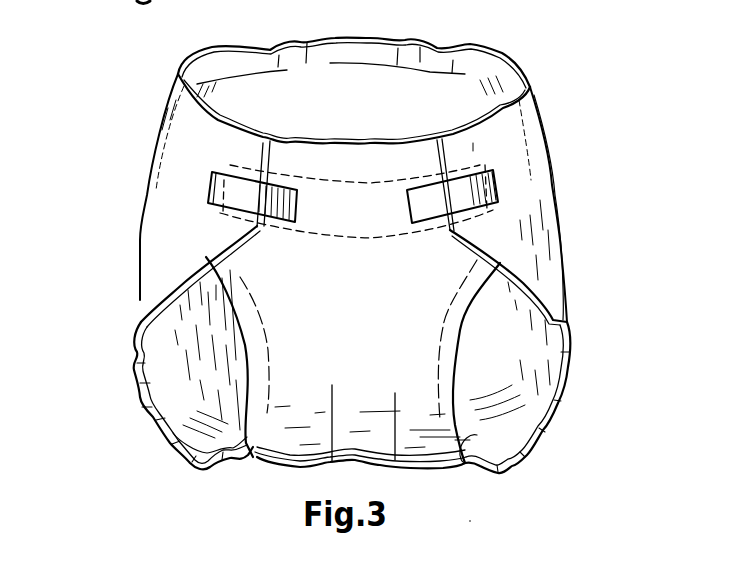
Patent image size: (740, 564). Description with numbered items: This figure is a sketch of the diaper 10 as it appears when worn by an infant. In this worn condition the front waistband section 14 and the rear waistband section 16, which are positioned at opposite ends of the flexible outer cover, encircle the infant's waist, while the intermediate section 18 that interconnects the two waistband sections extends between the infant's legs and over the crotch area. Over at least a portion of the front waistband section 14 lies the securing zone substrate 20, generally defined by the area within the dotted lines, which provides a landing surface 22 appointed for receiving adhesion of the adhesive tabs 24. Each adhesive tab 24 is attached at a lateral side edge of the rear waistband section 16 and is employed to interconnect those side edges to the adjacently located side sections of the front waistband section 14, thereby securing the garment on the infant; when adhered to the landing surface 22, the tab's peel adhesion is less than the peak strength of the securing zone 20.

The diaper 10 is at (132, 84).
The front waistband section 14 is at (365, 137).
The rear waistband section 16 is at (338, 50).
The intermediate section 18 is at (355, 462).
The securing zone substrate 20 is at (408, 235).
The landing surface 22 is at (367, 219).
The adhesive tab 24 is at (214, 186).